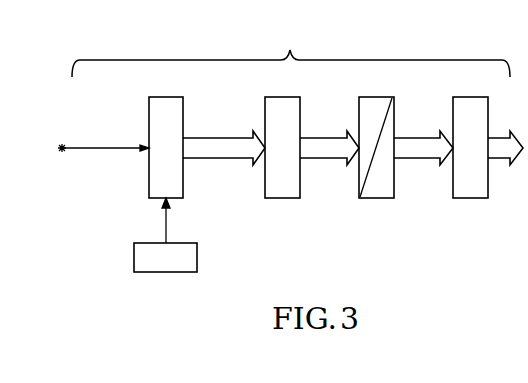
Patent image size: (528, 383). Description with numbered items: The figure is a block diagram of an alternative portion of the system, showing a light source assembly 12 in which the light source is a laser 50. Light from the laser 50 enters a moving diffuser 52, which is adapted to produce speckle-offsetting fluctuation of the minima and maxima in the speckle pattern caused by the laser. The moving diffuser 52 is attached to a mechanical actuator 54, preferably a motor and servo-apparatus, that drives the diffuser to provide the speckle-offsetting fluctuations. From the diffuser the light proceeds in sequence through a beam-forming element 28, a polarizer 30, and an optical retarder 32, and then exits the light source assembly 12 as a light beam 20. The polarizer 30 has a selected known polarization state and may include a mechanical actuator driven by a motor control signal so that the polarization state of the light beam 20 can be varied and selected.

The light source assembly 12 is at (291, 49).
The light beam 20 is at (503, 133).
The beam-forming element 28 is at (291, 198).
The polarizer 30 is at (384, 198).
The optical retarder 32 is at (480, 198).
The laser 50 is at (60, 150).
The moving diffuser 52 is at (183, 196).
The mechanical actuator 54 is at (197, 262).